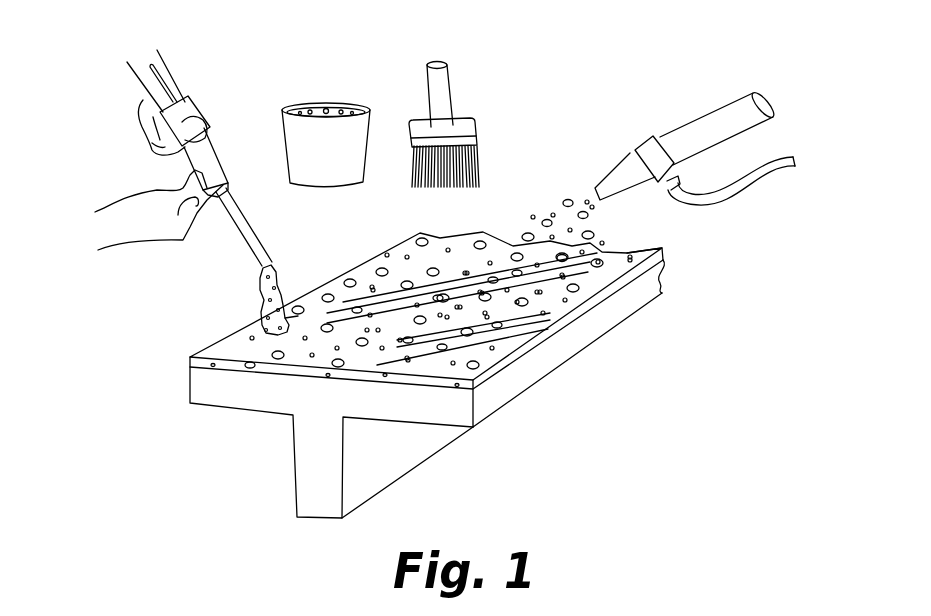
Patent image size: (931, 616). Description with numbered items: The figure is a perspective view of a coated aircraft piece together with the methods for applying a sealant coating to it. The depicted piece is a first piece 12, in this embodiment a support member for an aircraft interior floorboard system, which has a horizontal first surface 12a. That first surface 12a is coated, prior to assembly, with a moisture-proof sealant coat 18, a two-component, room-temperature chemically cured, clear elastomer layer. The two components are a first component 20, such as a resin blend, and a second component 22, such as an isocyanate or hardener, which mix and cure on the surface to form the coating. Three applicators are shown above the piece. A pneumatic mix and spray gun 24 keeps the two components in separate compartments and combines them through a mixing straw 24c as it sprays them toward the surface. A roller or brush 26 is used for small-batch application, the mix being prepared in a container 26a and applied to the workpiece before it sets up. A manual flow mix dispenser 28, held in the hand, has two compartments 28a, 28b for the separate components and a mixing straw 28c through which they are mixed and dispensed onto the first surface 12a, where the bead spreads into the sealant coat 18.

The first piece 12 is at (552, 355).
The first surface 12a is at (505, 365).
The sealant coat 18 is at (665, 250).
The first component 20 is at (570, 197).
The second component 22 is at (512, 232).
The pneumatic mix and spray gun 24 is at (680, 118).
The mixing straw 24c is at (618, 187).
The roller or brush 26 is at (477, 150).
The container 26a is at (332, 110).
The manual flow mix dispenser 28 is at (223, 222).
The first compartment 28a is at (147, 78).
The second compartment 28b is at (167, 77).
The mixing straw 28c is at (247, 227).